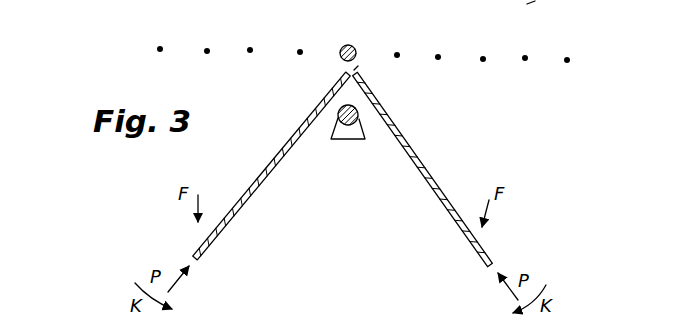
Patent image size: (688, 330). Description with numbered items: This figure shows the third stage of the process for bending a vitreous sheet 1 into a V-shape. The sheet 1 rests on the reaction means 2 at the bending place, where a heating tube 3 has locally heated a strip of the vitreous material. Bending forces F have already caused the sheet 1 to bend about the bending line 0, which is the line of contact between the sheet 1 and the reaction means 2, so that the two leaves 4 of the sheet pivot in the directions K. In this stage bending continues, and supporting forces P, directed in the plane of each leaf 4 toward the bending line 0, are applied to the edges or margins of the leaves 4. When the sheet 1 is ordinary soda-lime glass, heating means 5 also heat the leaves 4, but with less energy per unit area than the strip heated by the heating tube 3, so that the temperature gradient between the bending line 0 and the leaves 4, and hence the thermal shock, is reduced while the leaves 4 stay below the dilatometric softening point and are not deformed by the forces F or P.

The bending line 0 is at (357, 70).
The vitreous sheet 1 is at (343, 169).
The reaction means 2 is at (338, 116).
The heating tube 3 is at (346, 45).
The leaves 4 is at (272, 161).
The heating means 5 is at (163, 47).